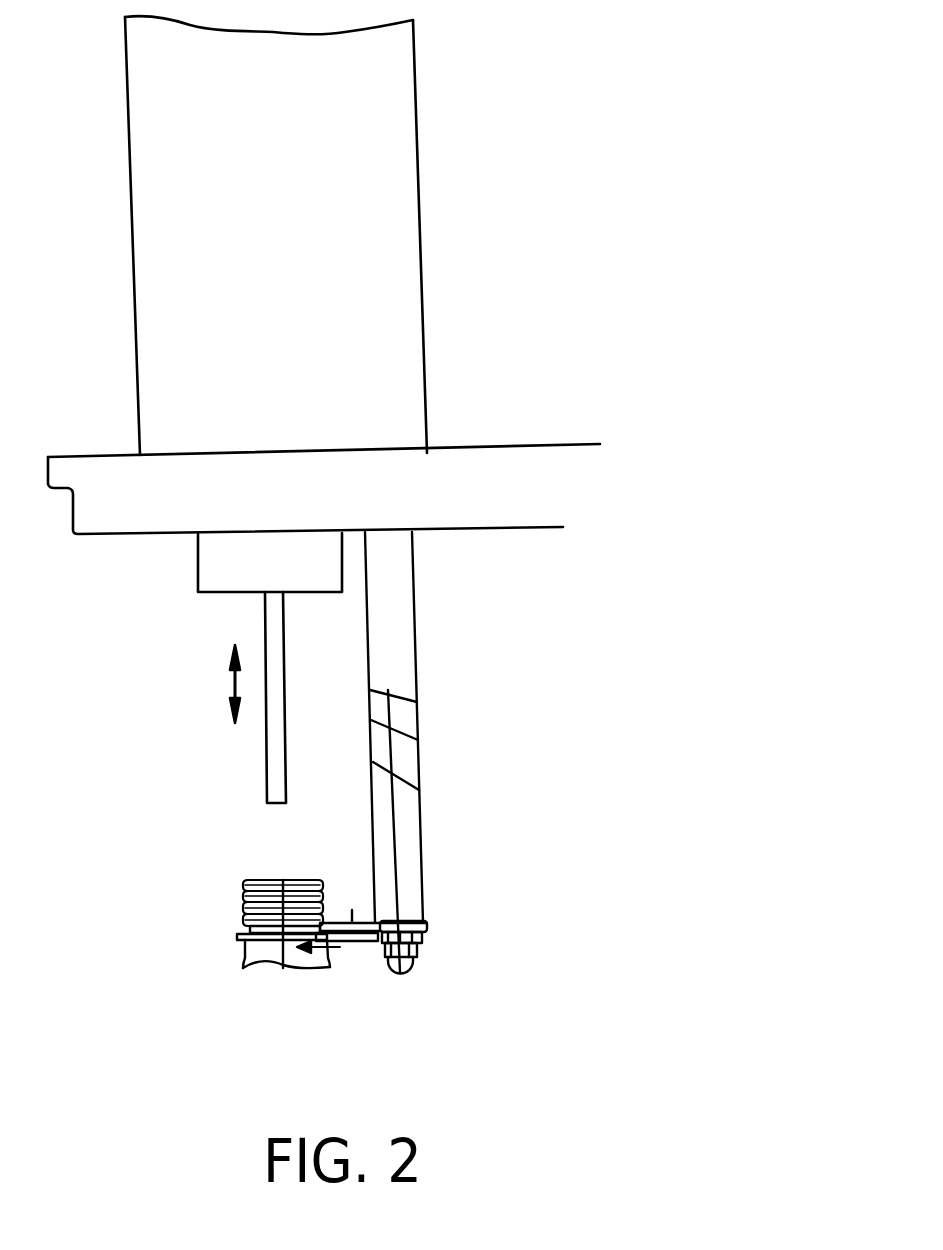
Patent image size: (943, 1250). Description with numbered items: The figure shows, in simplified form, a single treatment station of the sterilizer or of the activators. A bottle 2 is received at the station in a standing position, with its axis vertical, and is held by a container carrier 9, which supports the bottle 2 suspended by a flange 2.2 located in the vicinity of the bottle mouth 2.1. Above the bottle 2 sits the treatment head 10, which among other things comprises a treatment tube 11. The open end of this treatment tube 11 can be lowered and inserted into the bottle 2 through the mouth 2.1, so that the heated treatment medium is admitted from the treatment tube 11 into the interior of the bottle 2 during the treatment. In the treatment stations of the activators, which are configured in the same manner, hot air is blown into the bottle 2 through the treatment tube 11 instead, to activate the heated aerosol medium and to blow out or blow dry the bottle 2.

The bottle 2 is at (245, 954).
The bottle mouth 2.1 is at (287, 883).
The flange 2.2 is at (237, 938).
The container carrier 9 is at (352, 945).
The treatment head 10 is at (410, 385).
The treatment tube 11 is at (273, 740).